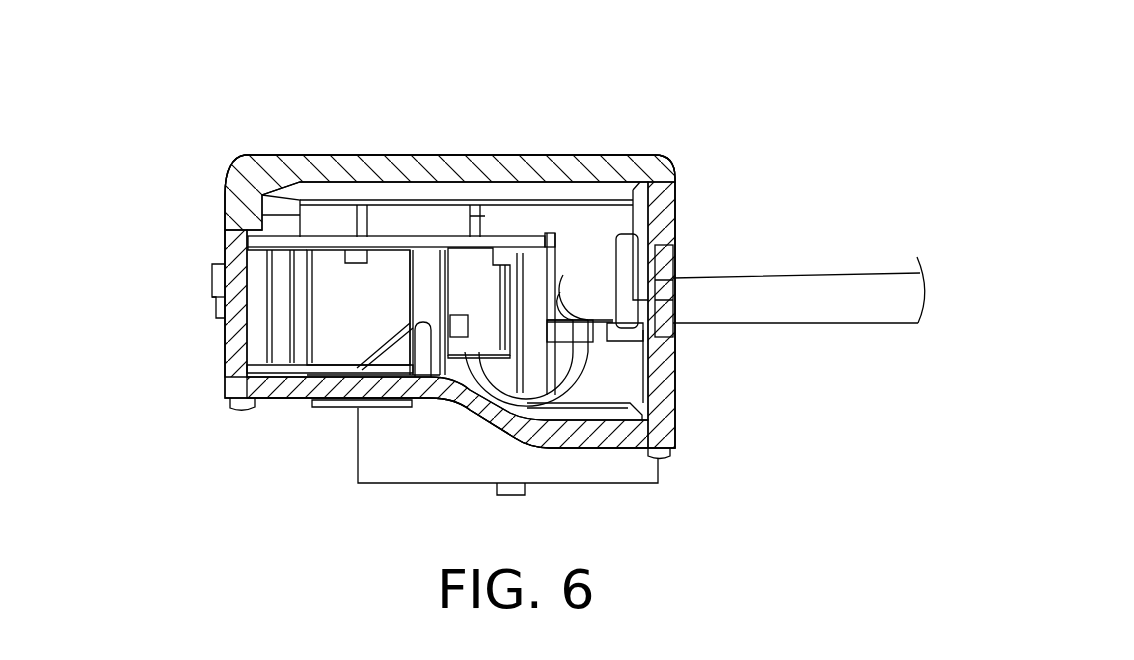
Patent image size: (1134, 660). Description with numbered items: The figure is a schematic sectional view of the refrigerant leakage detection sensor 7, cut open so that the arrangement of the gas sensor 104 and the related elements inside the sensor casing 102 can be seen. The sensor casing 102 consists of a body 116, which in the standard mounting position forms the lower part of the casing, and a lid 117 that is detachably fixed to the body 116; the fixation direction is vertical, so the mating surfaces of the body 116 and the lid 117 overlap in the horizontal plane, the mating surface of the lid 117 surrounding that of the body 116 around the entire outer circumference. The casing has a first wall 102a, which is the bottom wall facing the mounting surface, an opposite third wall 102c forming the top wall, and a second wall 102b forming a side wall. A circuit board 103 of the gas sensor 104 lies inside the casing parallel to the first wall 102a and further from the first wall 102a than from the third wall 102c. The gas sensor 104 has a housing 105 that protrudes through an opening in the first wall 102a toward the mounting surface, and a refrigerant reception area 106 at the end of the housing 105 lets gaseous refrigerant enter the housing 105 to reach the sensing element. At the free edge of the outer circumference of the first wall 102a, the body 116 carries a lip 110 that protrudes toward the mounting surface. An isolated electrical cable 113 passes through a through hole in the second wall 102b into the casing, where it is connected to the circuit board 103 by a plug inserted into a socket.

The refrigerant leakage detection sensor 7 is at (194, 69).
The sensor casing 102 is at (678, 388).
The first wall 102a is at (573, 432).
The second wall 102b is at (662, 330).
The third wall 102c is at (573, 167).
The circuit board 103 is at (358, 242).
The gas sensor 104 is at (306, 278).
The housing 105 is at (340, 320).
The refrigerant reception area 106 is at (337, 405).
The lip 110 is at (237, 401).
The isolated electrical cable 113 is at (850, 255).
The body 116 is at (220, 359).
The lid 117 is at (312, 152).